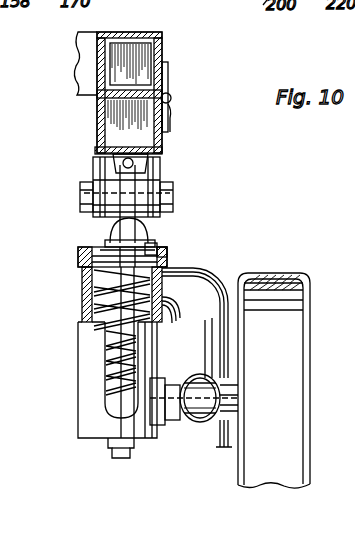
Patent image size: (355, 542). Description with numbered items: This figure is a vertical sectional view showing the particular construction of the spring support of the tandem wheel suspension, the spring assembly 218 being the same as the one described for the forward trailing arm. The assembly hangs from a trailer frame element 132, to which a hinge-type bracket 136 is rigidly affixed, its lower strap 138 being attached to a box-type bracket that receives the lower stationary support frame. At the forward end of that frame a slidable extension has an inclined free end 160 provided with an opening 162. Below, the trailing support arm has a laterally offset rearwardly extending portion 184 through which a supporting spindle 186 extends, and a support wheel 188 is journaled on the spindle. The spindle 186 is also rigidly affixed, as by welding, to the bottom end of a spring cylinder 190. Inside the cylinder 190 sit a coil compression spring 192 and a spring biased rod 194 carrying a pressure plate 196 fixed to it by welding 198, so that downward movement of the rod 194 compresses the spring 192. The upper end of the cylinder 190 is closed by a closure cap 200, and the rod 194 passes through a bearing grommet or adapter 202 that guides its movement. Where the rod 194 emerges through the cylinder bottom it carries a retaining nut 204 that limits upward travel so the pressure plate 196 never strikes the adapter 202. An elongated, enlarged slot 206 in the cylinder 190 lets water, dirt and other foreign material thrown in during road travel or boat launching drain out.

The trailer frame element 132 is at (110, 33).
The bracket 136 is at (168, 75).
The lower strap 138 is at (173, 101).
The spring biased rod 194 is at (135, 198).
The bearing grommet or adapter 202 is at (118, 242).
The closure cap 200 is at (78, 255).
The welding 198 is at (157, 247).
The pressure plate 196 is at (168, 260).
The spring cylinder 190 is at (83, 377).
The slot 206 is at (102, 385).
The coil compression spring 192 is at (108, 348).
The retaining nut 204 is at (132, 447).
The spring assembly 218 is at (66, 312).
The laterally offset rearwardly extending portion 184 is at (218, 300).
The supporting spindle 186 is at (176, 420).
The support wheel 188 is at (297, 295).
The inclined free end 160 is at (354, 336).
The opening 162 is at (354, 407).